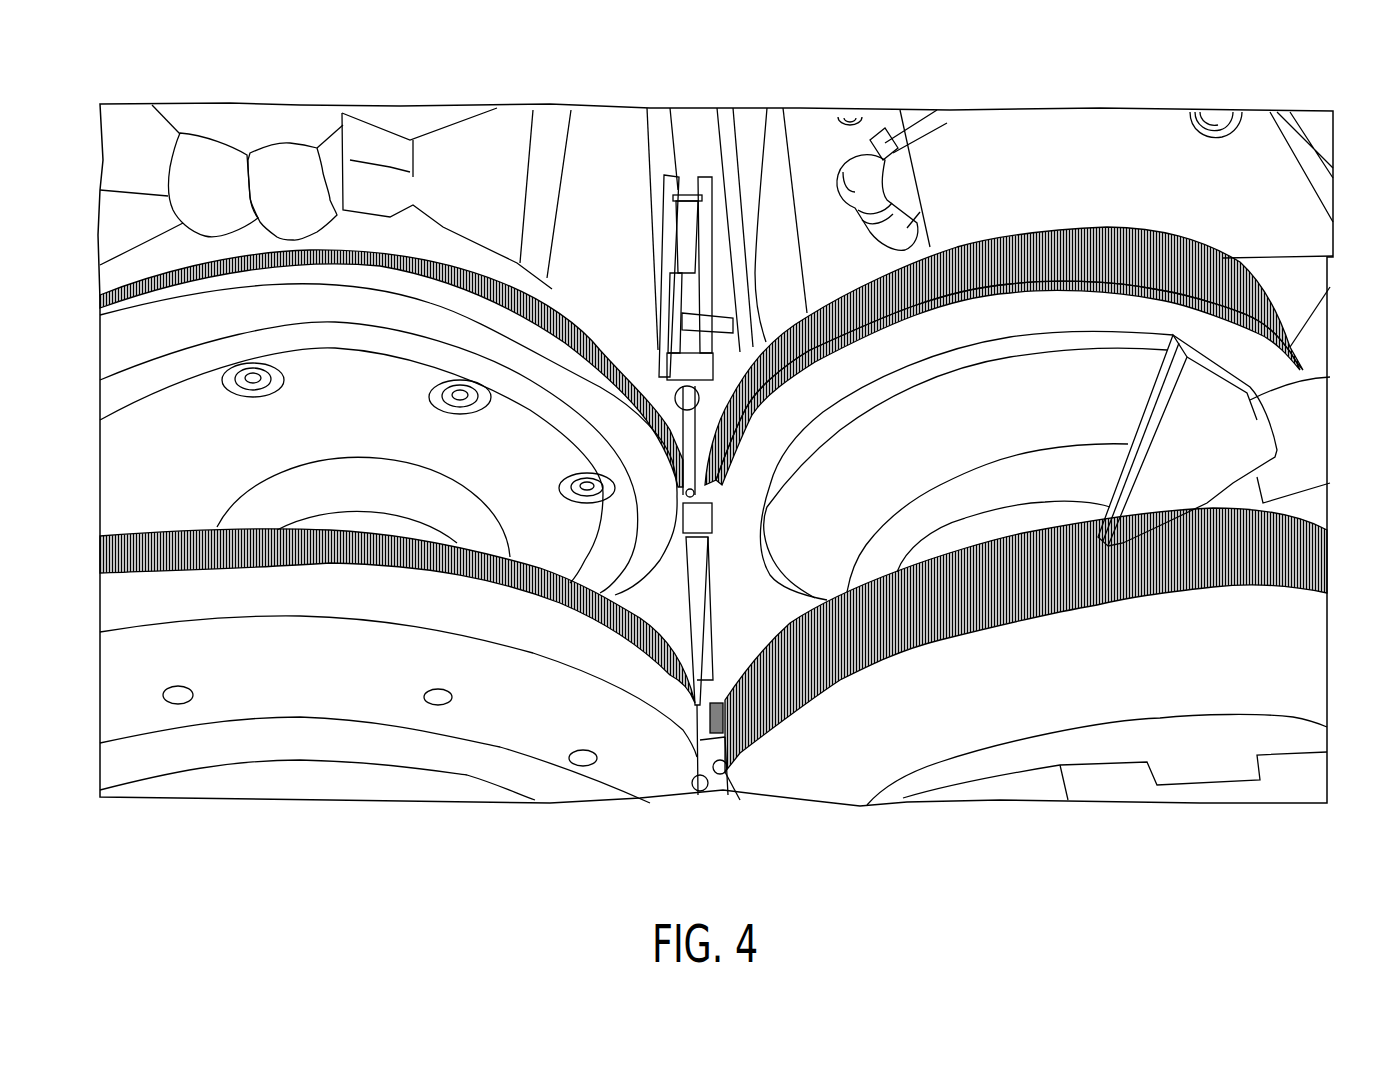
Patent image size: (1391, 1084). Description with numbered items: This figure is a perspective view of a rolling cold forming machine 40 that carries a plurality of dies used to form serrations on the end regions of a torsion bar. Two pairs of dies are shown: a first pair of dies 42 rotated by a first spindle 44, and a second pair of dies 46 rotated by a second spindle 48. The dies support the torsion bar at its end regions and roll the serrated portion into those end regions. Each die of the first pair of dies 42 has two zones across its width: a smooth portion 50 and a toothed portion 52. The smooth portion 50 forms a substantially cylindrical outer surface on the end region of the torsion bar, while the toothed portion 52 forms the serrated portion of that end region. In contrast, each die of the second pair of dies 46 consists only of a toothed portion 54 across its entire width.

The cold forming machine 40 is at (298, 100).
The first pair of dies 42 is at (97, 274).
The first spindle 44 is at (456, 504).
The second pair of dies 46 is at (1108, 224).
The second spindle 48 is at (988, 530).
The smooth portion 50 is at (402, 598).
The toothed portion 52 is at (233, 541).
The toothed portion 54 is at (907, 617).